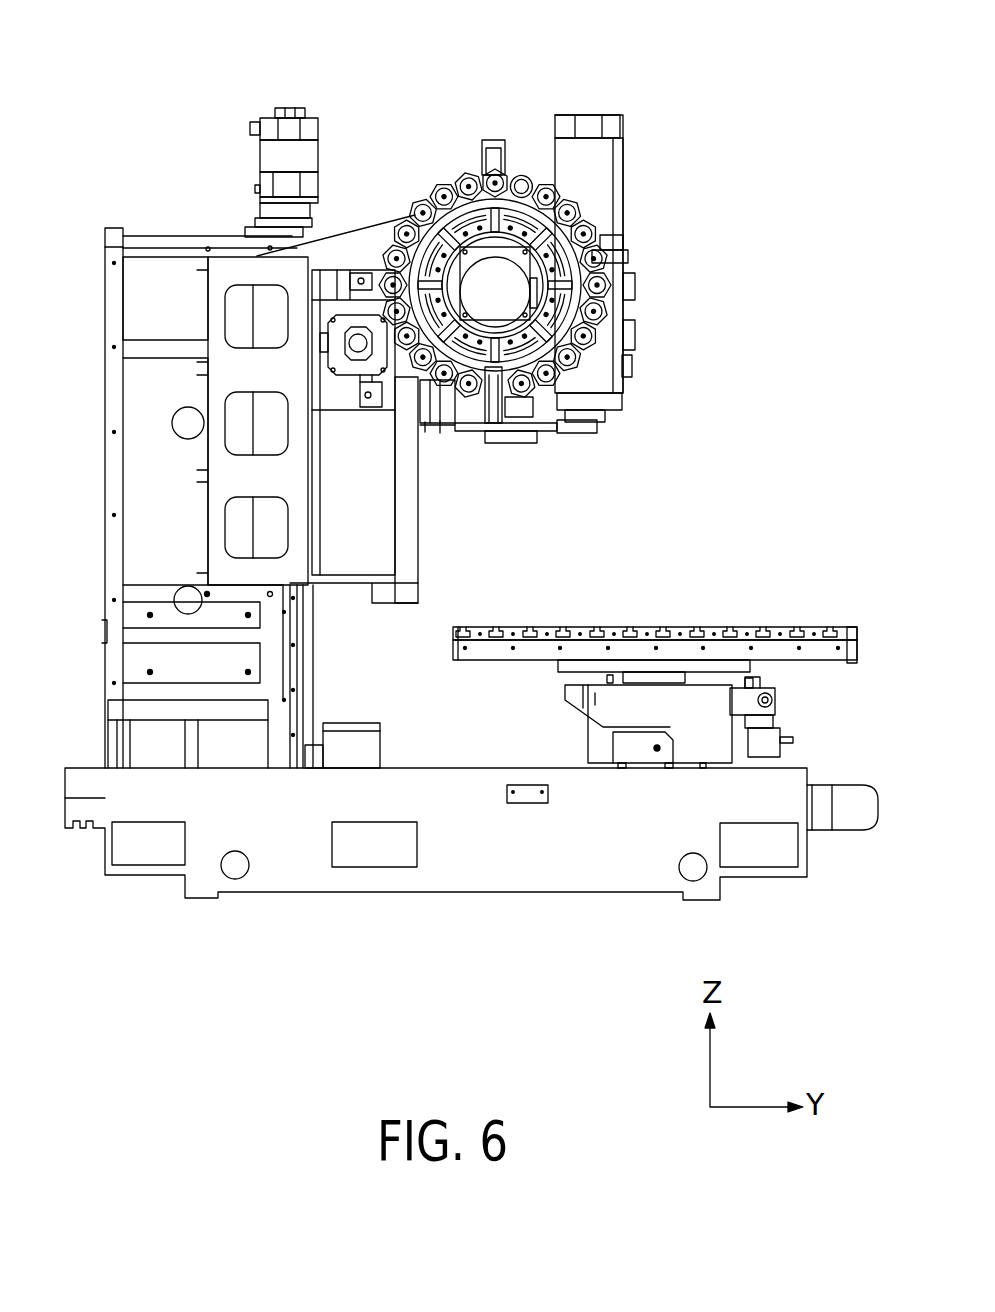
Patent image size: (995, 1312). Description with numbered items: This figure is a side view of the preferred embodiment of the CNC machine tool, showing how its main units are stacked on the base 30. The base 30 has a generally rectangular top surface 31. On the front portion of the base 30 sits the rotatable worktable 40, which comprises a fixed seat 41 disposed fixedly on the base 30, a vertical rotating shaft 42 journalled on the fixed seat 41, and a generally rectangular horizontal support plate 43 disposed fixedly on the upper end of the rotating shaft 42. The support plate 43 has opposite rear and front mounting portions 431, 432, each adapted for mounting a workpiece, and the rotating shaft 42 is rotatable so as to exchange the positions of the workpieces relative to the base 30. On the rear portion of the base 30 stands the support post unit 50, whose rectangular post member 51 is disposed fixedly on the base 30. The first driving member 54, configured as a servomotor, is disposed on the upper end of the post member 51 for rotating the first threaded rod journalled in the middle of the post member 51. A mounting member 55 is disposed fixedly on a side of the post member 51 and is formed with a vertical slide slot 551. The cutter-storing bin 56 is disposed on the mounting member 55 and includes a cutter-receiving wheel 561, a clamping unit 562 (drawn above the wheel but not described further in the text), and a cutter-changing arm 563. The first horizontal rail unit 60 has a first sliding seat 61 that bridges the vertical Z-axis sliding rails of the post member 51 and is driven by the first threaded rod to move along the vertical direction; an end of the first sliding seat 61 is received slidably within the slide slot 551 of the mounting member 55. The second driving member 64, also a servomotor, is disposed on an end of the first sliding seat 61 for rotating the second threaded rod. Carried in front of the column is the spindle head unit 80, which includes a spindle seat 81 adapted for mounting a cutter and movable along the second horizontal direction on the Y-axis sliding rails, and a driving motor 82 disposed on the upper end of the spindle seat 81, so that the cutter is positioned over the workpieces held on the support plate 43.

The base 30 is at (494, 910).
The top surface 31 is at (800, 768).
The rotatable worktable 40 is at (670, 633).
The fixed seat 41 is at (712, 705).
The vertical rotating shaft 42 is at (645, 660).
The horizontal support plate 43 is at (840, 656).
The rear mounting portion 431 is at (548, 627).
The front mounting portion 432 is at (830, 627).
The support post unit 50 is at (114, 207).
The post member 51 is at (140, 312).
The first driving member 54 is at (310, 160).
The mounting member 55 is at (220, 478).
The vertical slide slot 551 is at (385, 555).
The cutter-storing bin 56 is at (588, 200).
The cutter-receiving wheel 561 is at (600, 240).
The magazine index cylinder 562 is at (490, 136).
The cutter-changing arm 563 is at (540, 436).
The first horizontal rail unit 60 is at (340, 430).
The first sliding seat 61 is at (330, 278).
The second driving member 64 is at (378, 400).
The spindle head unit 80 is at (633, 122).
The spindle seat 81 is at (605, 378).
The driving motor 82 is at (585, 150).